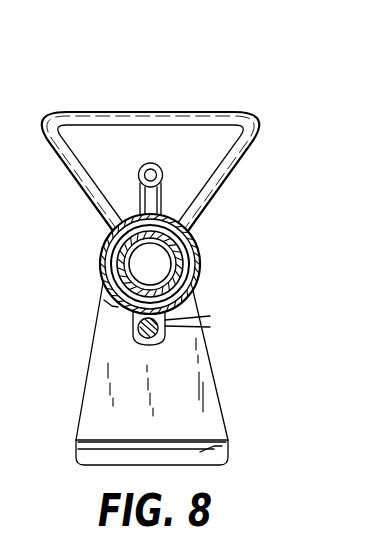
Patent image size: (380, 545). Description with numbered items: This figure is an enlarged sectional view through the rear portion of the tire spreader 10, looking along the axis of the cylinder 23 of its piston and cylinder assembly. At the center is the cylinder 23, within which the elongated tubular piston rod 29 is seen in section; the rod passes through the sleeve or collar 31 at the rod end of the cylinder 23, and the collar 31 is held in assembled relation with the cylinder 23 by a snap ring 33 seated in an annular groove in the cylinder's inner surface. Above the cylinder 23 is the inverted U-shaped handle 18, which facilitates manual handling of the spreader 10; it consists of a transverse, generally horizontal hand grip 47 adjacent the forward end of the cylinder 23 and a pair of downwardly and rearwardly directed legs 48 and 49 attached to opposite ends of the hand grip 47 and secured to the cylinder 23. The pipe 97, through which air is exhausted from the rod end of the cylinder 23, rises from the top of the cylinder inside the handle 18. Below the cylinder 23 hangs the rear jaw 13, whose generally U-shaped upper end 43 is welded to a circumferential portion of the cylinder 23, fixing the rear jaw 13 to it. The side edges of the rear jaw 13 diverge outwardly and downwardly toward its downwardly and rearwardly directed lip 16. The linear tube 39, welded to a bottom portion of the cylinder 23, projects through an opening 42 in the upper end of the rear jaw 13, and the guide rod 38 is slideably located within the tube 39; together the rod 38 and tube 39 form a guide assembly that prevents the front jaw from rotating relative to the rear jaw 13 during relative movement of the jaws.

The tire spreader 10 is at (198, 67).
The rear jaw 13 is at (185, 386).
The lip 16 is at (226, 448).
The handle 18 is at (82, 112).
The cylinder 23 is at (197, 243).
The piston rod 29 is at (123, 270).
The collar 31 is at (101, 244).
The snap ring 33 is at (103, 265).
The guide rod 38 is at (204, 326).
The tube 39 is at (133, 322).
The opening 42 is at (195, 317).
The upper end 43 is at (116, 307).
The hand grip 47 is at (161, 121).
The leg 48 is at (60, 155).
The leg 49 is at (224, 181).
The pipe 97 is at (156, 165).